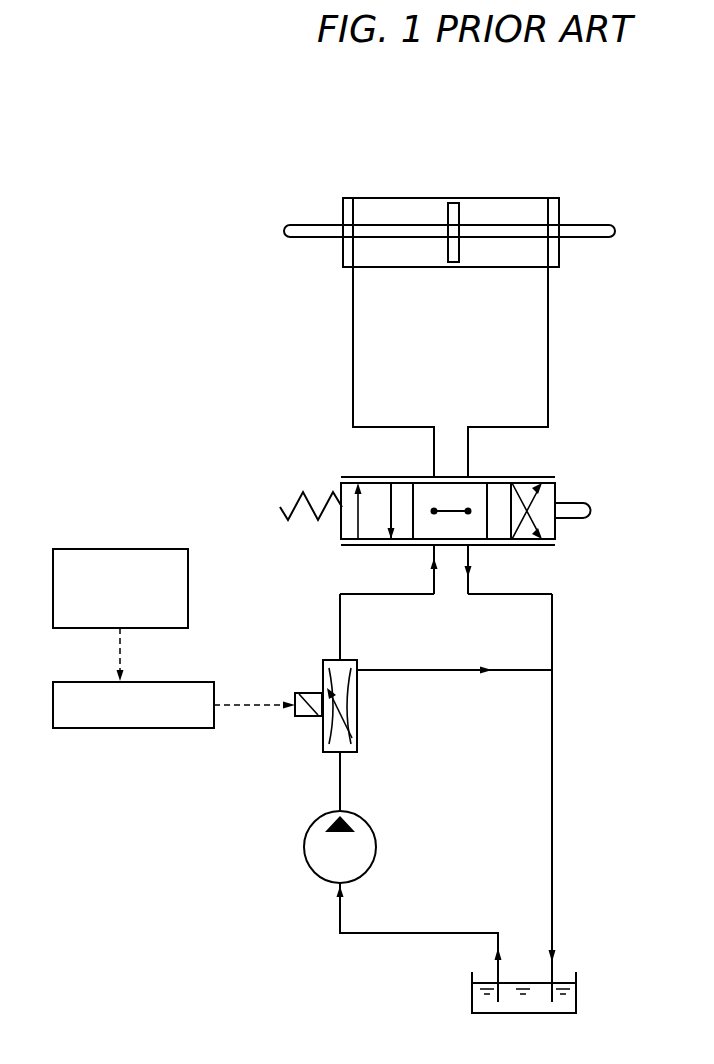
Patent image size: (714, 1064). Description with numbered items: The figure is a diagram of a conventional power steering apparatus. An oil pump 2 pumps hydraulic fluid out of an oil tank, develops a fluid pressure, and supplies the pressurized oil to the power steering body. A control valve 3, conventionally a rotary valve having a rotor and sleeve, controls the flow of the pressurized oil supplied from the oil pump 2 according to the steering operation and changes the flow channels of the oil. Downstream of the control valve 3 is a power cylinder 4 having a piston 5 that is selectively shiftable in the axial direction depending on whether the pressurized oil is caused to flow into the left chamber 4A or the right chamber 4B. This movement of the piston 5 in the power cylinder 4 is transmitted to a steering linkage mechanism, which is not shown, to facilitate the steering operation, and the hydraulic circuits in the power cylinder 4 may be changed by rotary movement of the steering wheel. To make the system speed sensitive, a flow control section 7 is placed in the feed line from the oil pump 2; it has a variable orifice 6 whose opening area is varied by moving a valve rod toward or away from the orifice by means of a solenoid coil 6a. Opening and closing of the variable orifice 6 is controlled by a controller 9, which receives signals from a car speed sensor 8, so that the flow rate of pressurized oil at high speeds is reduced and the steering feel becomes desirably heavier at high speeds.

The oil pump 2 is at (376, 831).
The control valve 3 is at (552, 477).
The power cylinder 4 is at (507, 191).
The left chamber 4A is at (386, 206).
The right chamber 4B is at (540, 208).
The piston 5 is at (453, 203).
The variable orifice 6 is at (357, 700).
The solenoid coil 6a is at (305, 716).
The flow control section 7 is at (309, 667).
The car speed sensor 8 is at (150, 549).
The controller 9 is at (172, 682).